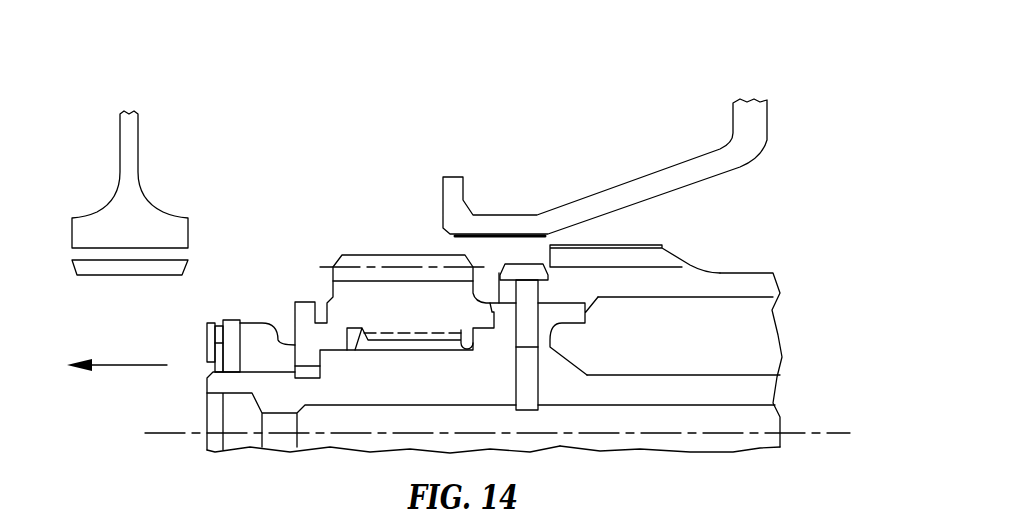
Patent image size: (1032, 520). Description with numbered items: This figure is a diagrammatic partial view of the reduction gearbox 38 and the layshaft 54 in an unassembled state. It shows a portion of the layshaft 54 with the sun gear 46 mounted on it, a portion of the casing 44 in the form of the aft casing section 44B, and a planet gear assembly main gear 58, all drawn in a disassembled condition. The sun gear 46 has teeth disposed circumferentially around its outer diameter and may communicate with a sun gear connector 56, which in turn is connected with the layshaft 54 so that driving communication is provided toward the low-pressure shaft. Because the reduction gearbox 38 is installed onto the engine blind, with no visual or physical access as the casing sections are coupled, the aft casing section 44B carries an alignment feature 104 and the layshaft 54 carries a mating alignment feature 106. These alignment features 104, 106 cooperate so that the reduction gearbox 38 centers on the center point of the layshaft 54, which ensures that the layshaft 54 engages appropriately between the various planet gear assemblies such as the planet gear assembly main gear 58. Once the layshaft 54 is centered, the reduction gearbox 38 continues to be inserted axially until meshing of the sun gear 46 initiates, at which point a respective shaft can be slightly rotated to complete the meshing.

The reduction gearbox 38 is at (572, 80).
The casing 44 is at (671, 166).
The aft casing section 44B is at (750, 120).
The sun gear 46 is at (373, 255).
The layshaft 54 is at (750, 265).
The sun gear connector 56 is at (415, 390).
The planet gear assembly main gear 58 is at (150, 200).
The alignment feature 104 is at (503, 233).
The alignment feature 106 is at (623, 245).